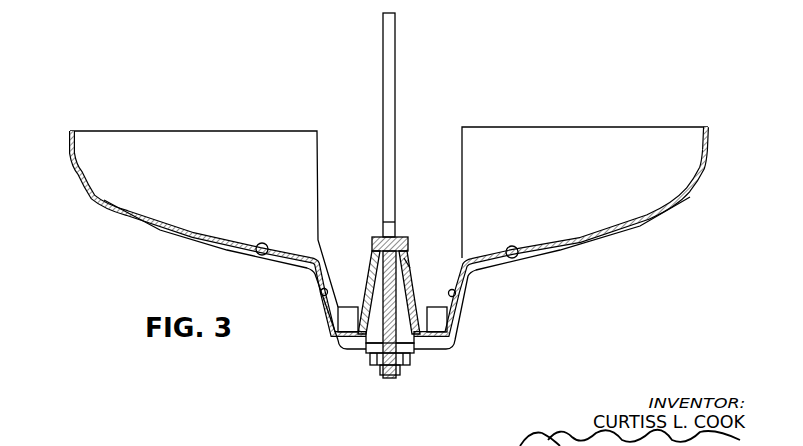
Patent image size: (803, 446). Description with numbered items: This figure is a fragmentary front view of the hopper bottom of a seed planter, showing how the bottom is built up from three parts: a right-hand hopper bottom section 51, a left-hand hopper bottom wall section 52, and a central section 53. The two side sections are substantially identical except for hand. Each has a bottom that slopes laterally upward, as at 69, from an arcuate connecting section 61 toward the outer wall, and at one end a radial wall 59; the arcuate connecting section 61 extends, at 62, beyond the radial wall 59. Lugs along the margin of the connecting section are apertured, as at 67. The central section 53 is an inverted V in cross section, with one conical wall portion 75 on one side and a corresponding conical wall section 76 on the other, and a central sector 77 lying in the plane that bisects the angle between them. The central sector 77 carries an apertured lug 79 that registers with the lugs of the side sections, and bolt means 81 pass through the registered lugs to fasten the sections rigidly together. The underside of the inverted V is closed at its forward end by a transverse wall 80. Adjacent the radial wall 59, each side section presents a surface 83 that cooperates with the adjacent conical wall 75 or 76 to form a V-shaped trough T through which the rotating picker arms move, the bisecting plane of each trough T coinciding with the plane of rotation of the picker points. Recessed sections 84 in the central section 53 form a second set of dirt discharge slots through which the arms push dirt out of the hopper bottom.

The hopper bottom section 51 is at (134, 217).
The hopper bottom wall section 52 is at (617, 230).
The central section of the hopper bottom wall 53 is at (406, 248).
The radial wall 59 is at (556, 147).
The arcuate connecting section 61 is at (345, 348).
The extension of the arcuate connecting section 62 is at (342, 305).
The apertures in the lugs 67 is at (382, 356).
The laterally upwardly sloping bottom 69 is at (262, 255).
The conical wall portion 75 is at (413, 280).
The conical wall section 76 is at (362, 290).
The central sector 77 is at (404, 262).
The apertured lug 79 is at (385, 377).
The transverse wall 80 is at (398, 302).
The bolt means 81 is at (376, 364).
The cooperating surface 83 is at (320, 294).
The recessed sections 84 is at (333, 337).
The trough T is at (340, 331).